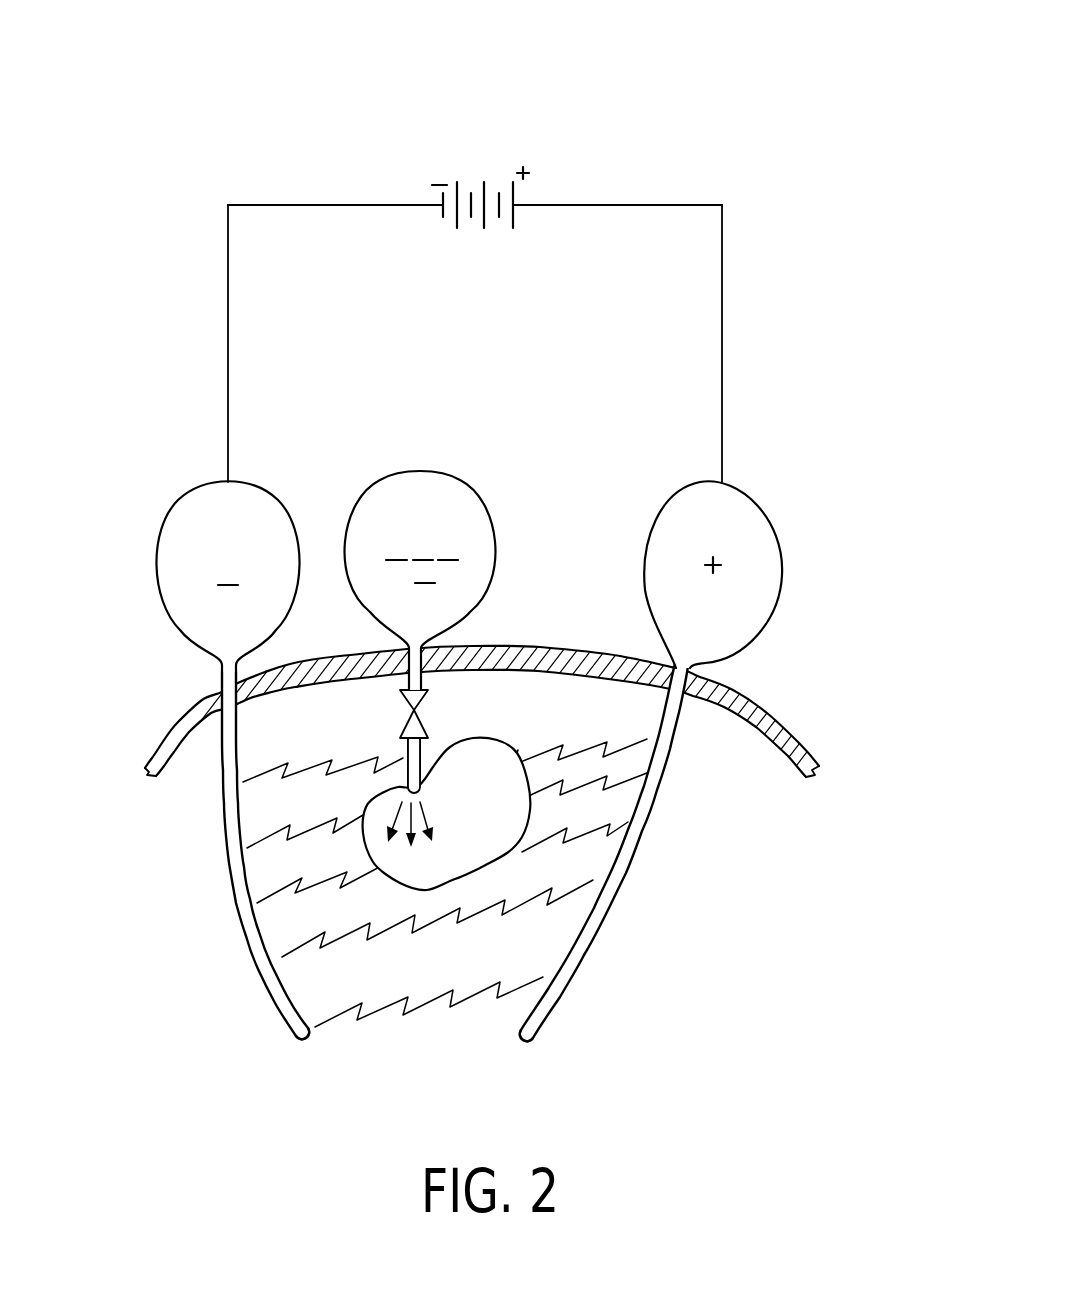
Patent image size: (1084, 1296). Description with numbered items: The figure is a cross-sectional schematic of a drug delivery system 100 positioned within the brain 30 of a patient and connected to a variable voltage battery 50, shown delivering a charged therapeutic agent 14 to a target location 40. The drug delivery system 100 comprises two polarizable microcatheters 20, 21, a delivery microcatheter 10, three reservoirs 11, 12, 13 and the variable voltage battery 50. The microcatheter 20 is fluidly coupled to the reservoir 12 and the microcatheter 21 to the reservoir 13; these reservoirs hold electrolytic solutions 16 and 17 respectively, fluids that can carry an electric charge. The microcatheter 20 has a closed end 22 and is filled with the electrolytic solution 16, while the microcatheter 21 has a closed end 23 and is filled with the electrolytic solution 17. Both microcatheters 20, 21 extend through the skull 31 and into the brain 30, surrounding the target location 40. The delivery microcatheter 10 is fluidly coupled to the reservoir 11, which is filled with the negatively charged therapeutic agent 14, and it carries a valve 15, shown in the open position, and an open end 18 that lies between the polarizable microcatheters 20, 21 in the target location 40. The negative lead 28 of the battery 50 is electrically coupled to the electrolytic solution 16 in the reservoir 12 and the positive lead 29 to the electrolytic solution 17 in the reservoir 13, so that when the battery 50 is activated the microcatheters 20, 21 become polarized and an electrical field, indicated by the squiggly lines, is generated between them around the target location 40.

The drug delivery system 100 is at (910, 328).
The variable voltage battery 50 is at (478, 167).
The negative lead 28 is at (229, 450).
The positive lead 29 is at (723, 430).
The reservoir 12 is at (161, 600).
The electrolytic solution 16 is at (190, 512).
The reservoir 13 is at (765, 509).
The electrolytic solution 17 is at (764, 568).
The reservoir 11 is at (439, 475).
The charged therapeutic agent 14 is at (462, 508).
The delivery microcatheter 10 is at (405, 757).
The valve 15 is at (425, 693).
The open end 18 is at (406, 791).
The brain 30 is at (730, 748).
The skull 31 is at (800, 746).
The polarizable microcatheter 20 is at (247, 927).
The polarizable microcatheter 21 is at (572, 986).
The closed end 22 is at (302, 1045).
The closed end 23 is at (524, 1044).
The target location 40 is at (514, 813).